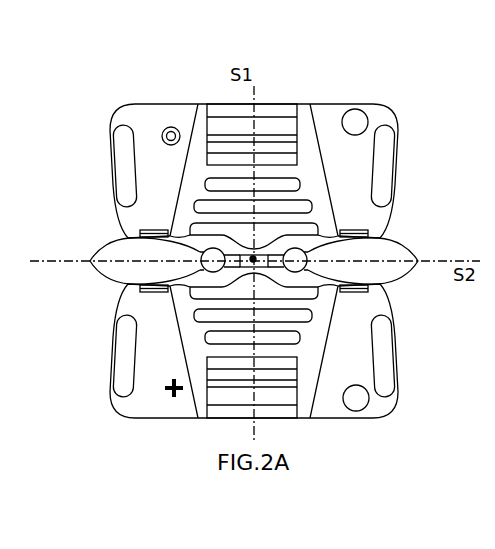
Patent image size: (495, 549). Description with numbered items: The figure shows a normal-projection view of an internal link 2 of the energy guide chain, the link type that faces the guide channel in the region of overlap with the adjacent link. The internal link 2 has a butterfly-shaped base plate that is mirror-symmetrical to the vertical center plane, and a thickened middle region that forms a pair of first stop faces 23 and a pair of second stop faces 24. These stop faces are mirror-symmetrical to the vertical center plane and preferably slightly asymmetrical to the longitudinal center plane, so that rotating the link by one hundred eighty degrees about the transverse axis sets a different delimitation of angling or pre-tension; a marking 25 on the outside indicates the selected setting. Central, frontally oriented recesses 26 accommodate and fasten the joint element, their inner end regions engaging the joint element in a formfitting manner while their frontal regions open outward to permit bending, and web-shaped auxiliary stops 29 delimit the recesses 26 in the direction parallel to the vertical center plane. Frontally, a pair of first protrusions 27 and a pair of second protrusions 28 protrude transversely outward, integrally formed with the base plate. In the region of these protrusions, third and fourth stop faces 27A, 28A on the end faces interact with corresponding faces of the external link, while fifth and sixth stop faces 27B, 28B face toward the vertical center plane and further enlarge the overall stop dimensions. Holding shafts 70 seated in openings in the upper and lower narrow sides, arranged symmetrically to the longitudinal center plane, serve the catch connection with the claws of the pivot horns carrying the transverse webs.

The internal link 2 is at (108, 86).
The first stop faces 23 is at (187, 167).
The second stop faces 24 is at (188, 355).
The marking 25 is at (252, 257).
The recesses 26 is at (156, 265).
The first protrusions 27 is at (428, 177).
The third stop faces 27A is at (78, 136).
The fifth stop faces 27B is at (124, 228).
The second protrusions 28 is at (126, 354).
The fourth stop faces 28A is at (108, 372).
The sixth stop faces 28B is at (124, 294).
The auxiliary stops 29 is at (88, 276).
The holding shaft 70 is at (265, 124).